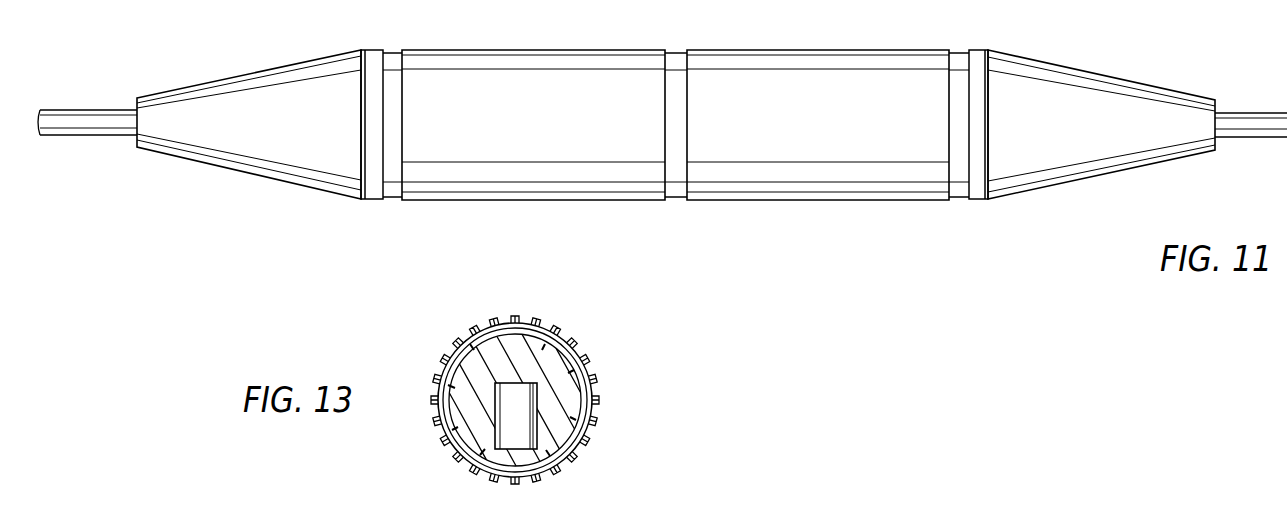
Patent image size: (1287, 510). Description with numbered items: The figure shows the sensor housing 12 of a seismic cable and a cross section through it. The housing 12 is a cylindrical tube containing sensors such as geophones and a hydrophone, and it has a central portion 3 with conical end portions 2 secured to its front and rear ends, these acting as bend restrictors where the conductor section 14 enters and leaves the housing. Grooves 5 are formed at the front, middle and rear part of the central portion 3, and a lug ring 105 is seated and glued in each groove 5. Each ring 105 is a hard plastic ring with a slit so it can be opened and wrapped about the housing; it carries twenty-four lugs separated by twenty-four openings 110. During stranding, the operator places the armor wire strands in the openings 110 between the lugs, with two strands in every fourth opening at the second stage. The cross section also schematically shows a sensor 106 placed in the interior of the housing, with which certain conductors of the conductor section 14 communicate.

In FIG. 11, the conical end portions 2 is at (278, 97).
In FIG. 11, the central portion 3 is at (832, 82).
In FIG. 13, the central portion 3 is at (580, 418).
In FIG. 11, the grooves 5 is at (393, 73).
In FIG. 11, the sensor housing 12 is at (769, 238).
In FIG. 11, the conductor section 14 is at (90, 122).
In FIG. 13, the lug ring 105 is at (590, 388).
In FIG. 13, the sensor 106 is at (526, 386).
In FIG. 13, the openings 110 is at (548, 318).